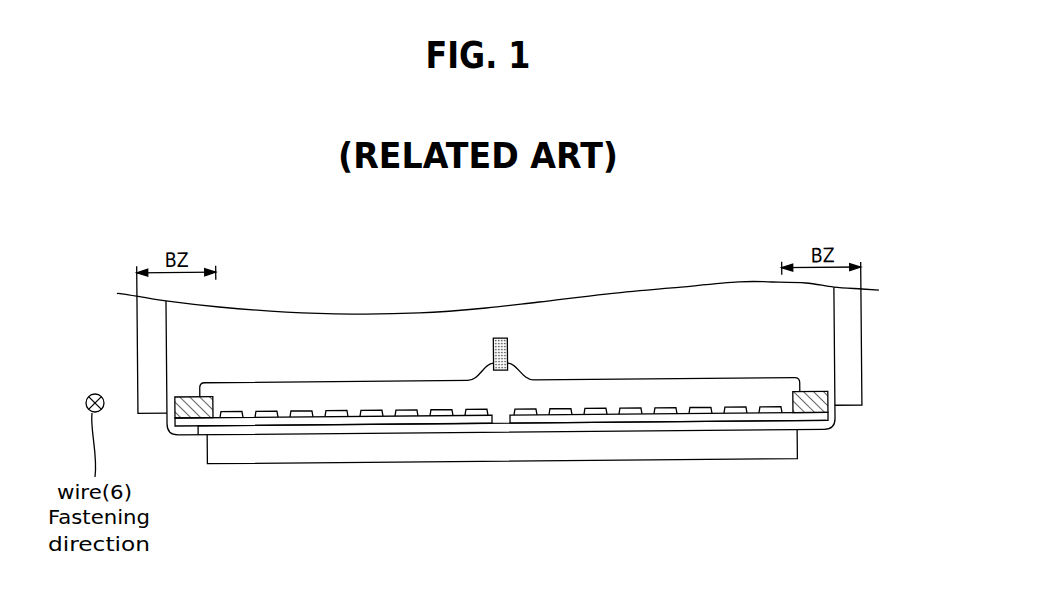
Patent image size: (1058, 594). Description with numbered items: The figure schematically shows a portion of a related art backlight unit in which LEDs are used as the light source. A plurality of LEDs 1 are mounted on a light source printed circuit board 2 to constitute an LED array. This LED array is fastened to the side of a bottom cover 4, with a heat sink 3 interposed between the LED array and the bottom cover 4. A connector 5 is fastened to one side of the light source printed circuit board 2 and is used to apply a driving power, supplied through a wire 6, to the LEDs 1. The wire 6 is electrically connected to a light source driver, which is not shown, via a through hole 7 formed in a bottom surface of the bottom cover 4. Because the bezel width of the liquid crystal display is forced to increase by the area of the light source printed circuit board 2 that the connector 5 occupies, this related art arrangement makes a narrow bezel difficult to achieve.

The LED 1 is at (299, 418).
The light source printed circuit board 2 is at (373, 426).
The heat sink 3 is at (433, 435).
The bottom cover 4 is at (823, 346).
The connector 5 is at (188, 418).
The wire 6 is at (342, 383).
The through hole 7 is at (500, 341).